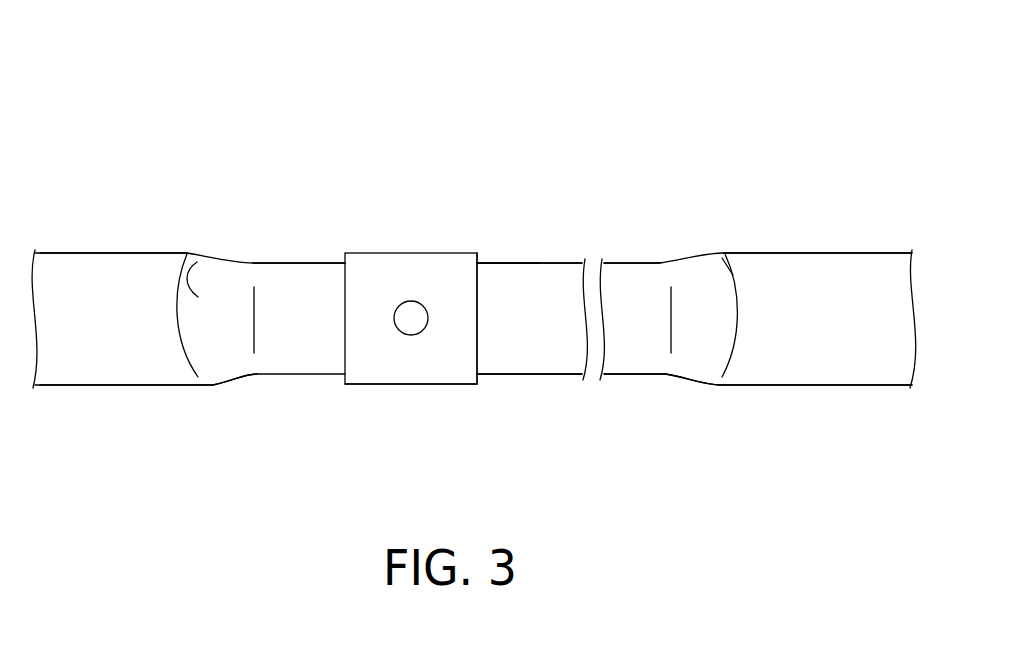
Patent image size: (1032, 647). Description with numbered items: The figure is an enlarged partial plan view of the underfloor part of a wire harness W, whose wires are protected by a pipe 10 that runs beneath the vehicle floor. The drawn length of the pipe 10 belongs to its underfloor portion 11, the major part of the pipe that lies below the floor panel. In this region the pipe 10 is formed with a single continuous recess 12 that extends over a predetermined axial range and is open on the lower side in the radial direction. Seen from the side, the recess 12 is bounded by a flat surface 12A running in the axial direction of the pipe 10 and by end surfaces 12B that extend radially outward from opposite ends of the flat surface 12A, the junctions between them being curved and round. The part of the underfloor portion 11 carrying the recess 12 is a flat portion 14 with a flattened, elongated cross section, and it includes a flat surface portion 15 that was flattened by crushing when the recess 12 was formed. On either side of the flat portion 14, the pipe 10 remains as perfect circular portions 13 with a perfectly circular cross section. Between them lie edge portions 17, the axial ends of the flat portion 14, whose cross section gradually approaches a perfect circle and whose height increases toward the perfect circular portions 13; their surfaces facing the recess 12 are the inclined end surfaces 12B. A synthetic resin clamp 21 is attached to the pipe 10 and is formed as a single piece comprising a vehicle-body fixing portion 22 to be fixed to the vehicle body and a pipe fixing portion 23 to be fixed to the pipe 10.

The wire harness W is at (162, 112).
The pipe 10 is at (84, 274).
The underfloor portion 11 is at (154, 272).
The recess 12 is at (540, 272).
The flat surface 12A is at (507, 275).
The end surfaces 12B is at (188, 258).
The perfect circular portions 13 is at (873, 272).
The flat portion 14 is at (622, 270).
The flat surface portion 15 is at (298, 343).
The edge portions 17 is at (212, 343).
The clamp 21 is at (374, 270).
The vehicle-body fixing portion 22 is at (408, 323).
The pipe fixing portion 23 is at (440, 360).